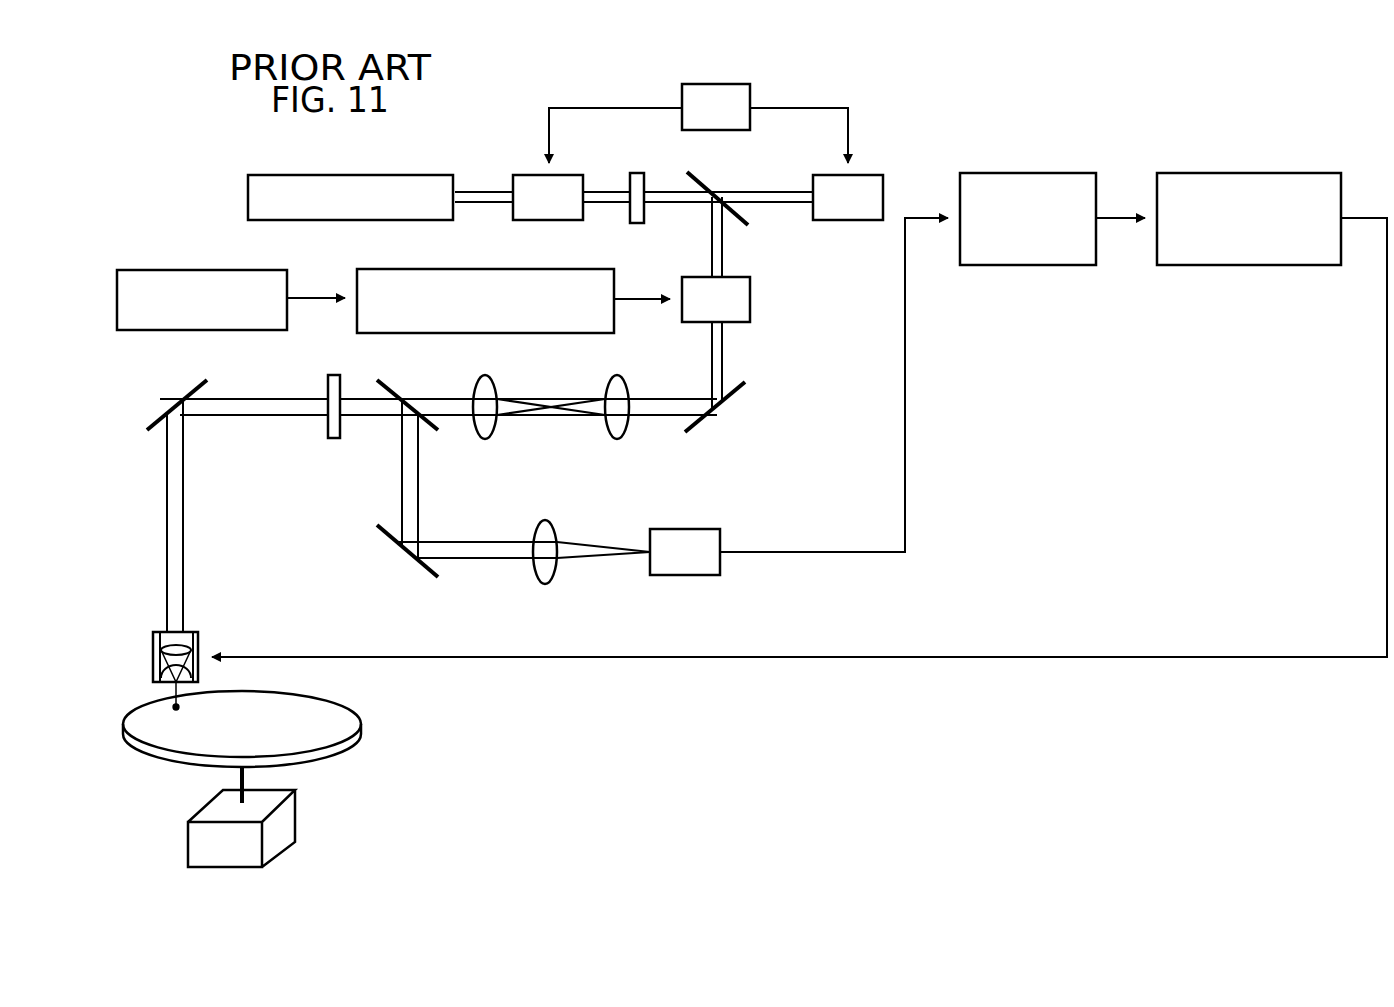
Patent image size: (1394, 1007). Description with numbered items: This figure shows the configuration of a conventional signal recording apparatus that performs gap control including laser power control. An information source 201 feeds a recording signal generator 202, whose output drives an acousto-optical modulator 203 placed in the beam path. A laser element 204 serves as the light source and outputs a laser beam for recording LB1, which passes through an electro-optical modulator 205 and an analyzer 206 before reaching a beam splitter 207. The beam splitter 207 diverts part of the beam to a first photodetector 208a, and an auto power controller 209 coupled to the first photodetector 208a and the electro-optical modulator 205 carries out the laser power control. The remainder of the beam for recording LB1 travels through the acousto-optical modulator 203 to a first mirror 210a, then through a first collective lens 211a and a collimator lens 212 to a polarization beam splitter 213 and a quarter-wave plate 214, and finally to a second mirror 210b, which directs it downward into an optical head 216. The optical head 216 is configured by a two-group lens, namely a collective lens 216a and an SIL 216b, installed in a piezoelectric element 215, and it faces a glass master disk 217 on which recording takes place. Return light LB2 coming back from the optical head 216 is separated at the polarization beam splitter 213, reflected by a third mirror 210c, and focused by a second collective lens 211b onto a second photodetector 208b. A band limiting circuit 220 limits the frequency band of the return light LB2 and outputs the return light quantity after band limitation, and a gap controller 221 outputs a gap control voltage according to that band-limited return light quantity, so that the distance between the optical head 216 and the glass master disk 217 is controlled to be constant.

The information source 201 is at (237, 270).
The recording signal generator 202 is at (503, 269).
The acousto-optical modulator (AOM) 203 is at (700, 277).
The laser element 204 is at (333, 175).
The electro-optical modulator (EOM) 205 is at (535, 175).
The analyzer 206 is at (637, 173).
The beam splitter (BS) 207 is at (700, 183).
The first photodetector (PD1) 208a is at (863, 175).
The second photodetector (PD2) 208b is at (707, 529).
The auto power controller (APC) 209 is at (738, 84).
The first mirror 210a is at (727, 397).
The second mirror 210b is at (190, 390).
The third mirror 210c is at (433, 573).
The first collective lens 211a is at (620, 375).
The second collective lens 211b is at (552, 520).
The collimator lens 212 is at (490, 375).
The polarization beam splitter (PBS) 213 is at (397, 390).
The λ/4 plate 214 is at (335, 375).
The piezoelectric element 215 is at (197, 632).
The optical head 216 is at (162, 632).
The collective lens 216a is at (198, 645).
The SIL 216b is at (193, 670).
The glass master disk 217 is at (340, 717).
The band limiting circuit 220 is at (1048, 173).
The gap controller 221 is at (1293, 173).
The laser beam for recording LB1 is at (722, 250).
The return light LB2 is at (418, 480).